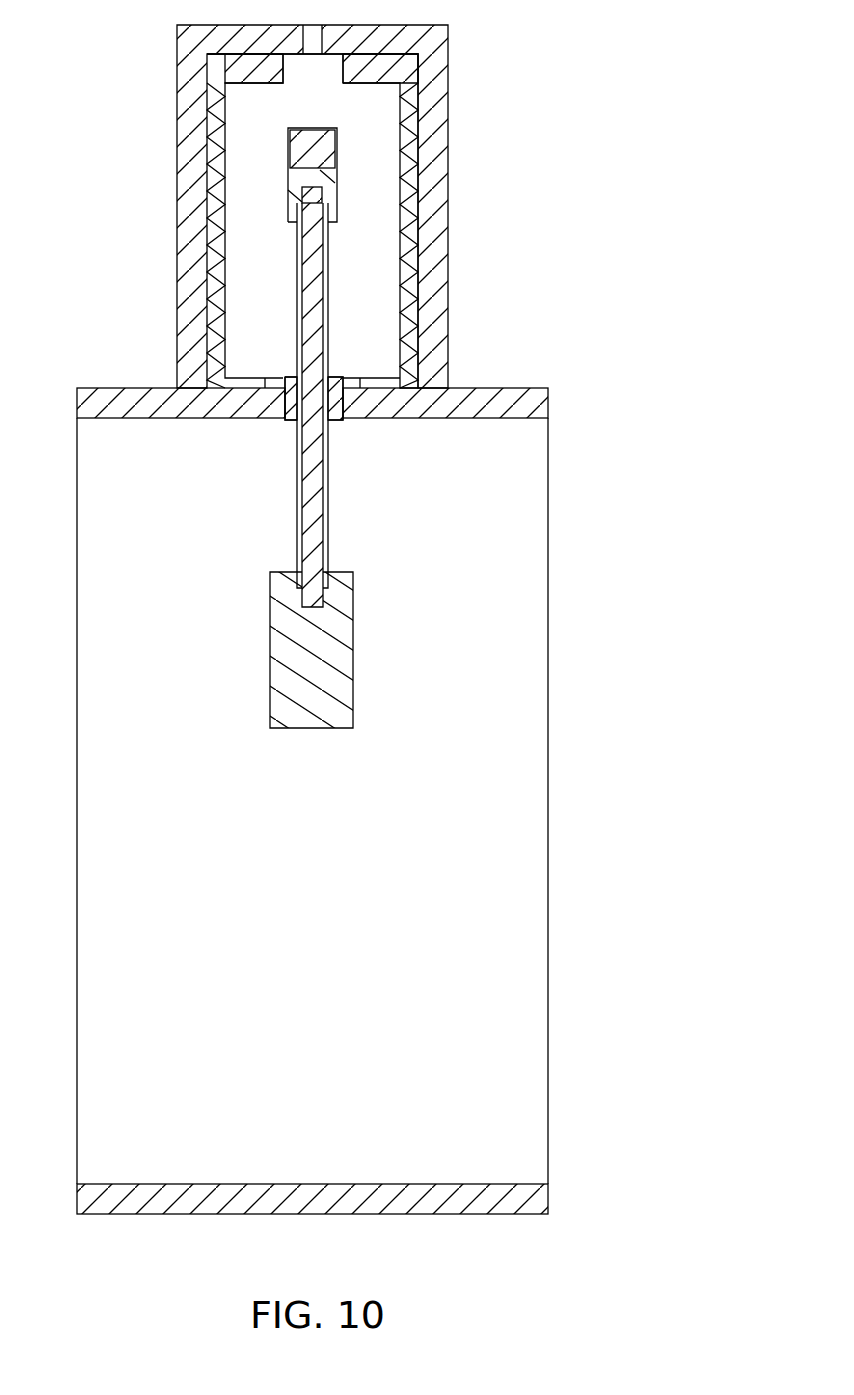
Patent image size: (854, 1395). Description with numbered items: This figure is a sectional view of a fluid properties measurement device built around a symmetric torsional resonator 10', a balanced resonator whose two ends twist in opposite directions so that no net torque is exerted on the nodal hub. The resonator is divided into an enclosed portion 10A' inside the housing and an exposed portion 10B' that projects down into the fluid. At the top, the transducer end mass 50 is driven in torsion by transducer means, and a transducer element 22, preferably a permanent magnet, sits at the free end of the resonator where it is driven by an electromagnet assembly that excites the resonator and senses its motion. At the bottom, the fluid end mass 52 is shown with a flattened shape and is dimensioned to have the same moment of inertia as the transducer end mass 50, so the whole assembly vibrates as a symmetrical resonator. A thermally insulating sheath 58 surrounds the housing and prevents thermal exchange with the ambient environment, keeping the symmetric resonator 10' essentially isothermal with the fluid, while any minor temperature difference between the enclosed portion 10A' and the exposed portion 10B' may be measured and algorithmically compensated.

The thermally insulating sheath 58 is at (448, 122).
The transducer element 22 is at (295, 143).
The transducer end mass 50 is at (337, 177).
The enclosed portion 10A' is at (279, 295).
The exposed portion 10B' is at (270, 497).
The fluid end mass 52 is at (353, 692).
The symmetric torsional resonator 10' is at (312, 801).